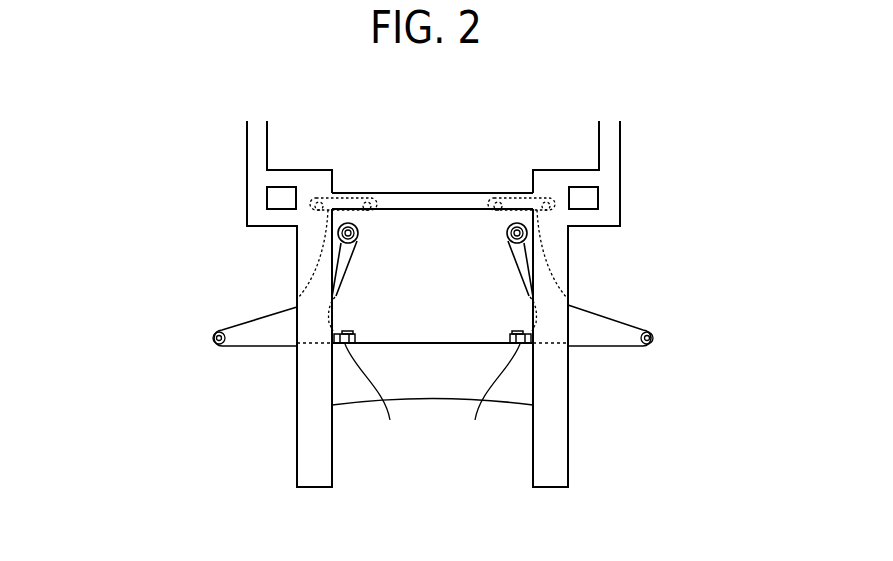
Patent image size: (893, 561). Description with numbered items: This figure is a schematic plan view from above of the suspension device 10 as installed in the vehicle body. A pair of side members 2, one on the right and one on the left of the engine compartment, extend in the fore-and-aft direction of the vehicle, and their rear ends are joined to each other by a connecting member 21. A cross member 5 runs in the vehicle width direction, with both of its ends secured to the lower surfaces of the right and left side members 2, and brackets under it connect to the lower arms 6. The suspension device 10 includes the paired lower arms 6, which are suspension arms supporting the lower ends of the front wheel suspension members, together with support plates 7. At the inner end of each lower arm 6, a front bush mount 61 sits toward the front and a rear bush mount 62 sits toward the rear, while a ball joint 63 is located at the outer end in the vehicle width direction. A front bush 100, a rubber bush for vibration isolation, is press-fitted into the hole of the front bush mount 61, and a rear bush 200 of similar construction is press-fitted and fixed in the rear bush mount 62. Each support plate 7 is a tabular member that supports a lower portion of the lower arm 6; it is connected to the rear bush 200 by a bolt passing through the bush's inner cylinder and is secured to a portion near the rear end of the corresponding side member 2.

The suspension device 10 is at (132, 197).
The side members 2 is at (297, 463).
The connecting member 21 is at (482, 197).
The cross member 5 is at (437, 341).
The support plate 7 is at (370, 222).
The lower arms 6 is at (278, 312).
The rear bush mount 62 is at (338, 236).
The ball joints 63 is at (211, 336).
The rear bush 200 is at (343, 242).
The front bush 100 is at (346, 330).
The front bush mounts 61 is at (432, 396).